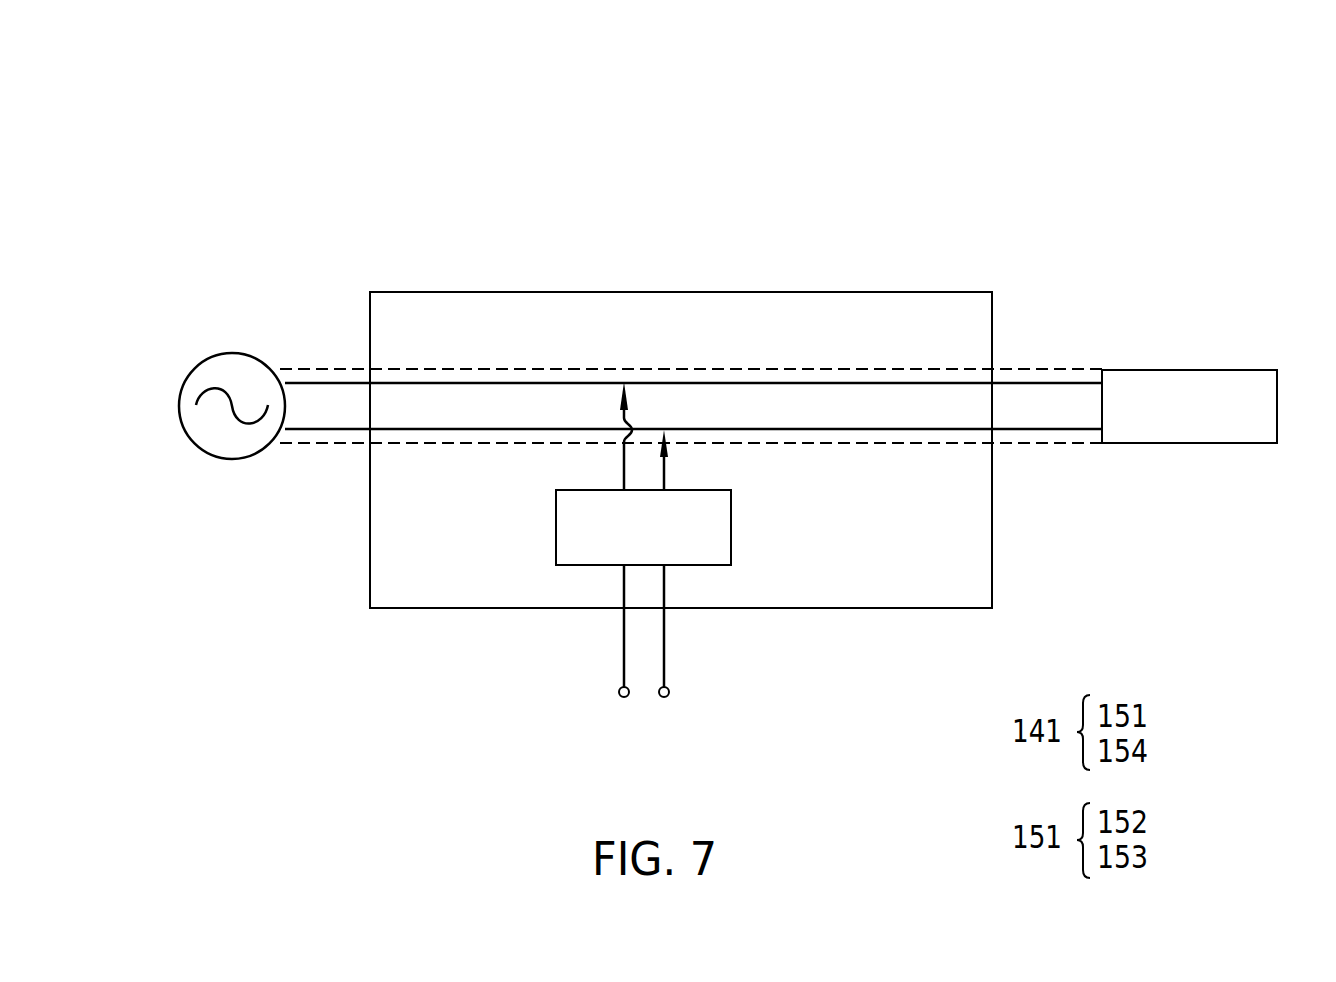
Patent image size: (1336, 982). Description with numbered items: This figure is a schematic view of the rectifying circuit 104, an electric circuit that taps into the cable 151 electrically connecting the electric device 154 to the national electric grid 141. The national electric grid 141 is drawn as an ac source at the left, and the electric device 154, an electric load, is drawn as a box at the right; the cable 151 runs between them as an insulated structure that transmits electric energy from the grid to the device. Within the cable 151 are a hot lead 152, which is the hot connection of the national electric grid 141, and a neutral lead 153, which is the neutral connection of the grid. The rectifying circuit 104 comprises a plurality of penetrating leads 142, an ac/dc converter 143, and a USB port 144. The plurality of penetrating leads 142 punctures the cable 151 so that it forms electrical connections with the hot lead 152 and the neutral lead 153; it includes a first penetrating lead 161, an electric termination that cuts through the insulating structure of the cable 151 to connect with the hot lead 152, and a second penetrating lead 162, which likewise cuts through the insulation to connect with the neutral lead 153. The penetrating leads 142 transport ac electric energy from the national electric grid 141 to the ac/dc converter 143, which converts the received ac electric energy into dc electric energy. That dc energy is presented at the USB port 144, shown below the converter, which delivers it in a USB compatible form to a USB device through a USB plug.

The rectifying circuit 104 is at (246, 143).
The national electric grid 141 is at (197, 368).
The plurality of penetrating leads 142 is at (523, 467).
The ac/dc converter 143 is at (731, 543).
The USB port 144 is at (670, 694).
The cable 151 is at (628, 369).
The hot lead 152 is at (825, 383).
The neutral lead 153 is at (858, 429).
The electric device 154 is at (1190, 443).
The first penetrating lead 161 is at (620, 399).
The second penetrating lead 162 is at (660, 460).